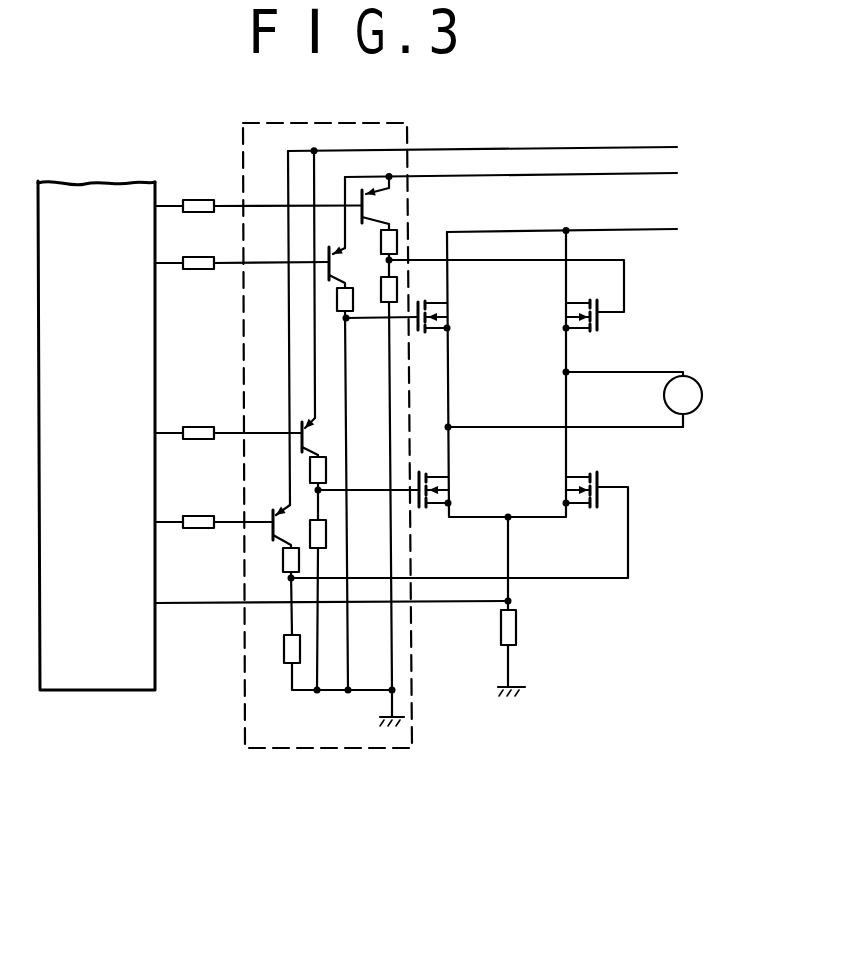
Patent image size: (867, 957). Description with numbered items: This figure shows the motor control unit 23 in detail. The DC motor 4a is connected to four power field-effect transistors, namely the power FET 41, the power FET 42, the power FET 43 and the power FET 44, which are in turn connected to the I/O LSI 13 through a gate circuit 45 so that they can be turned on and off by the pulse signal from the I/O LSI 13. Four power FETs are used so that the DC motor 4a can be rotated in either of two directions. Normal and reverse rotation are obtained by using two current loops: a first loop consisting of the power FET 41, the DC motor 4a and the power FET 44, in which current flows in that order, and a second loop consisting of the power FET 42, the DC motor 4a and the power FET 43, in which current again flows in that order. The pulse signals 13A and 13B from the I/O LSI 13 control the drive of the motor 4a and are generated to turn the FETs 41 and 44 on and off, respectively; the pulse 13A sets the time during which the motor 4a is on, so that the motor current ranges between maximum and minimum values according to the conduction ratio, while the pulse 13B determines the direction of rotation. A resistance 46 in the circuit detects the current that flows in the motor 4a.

The I/O LSI 13 is at (106, 677).
The pulse signal 13A is at (183, 200).
The pulse signal 13B is at (174, 433).
The gate circuit 45 is at (247, 738).
The motor control unit 23 is at (458, 684).
The power field-effect transistor 41 is at (603, 322).
The power field-effect transistor 42 is at (453, 313).
The power field-effect transistor 43 is at (605, 472).
The power field-effect transistor 44 is at (455, 488).
The DC motor 4a is at (697, 413).
The resistance 46 is at (517, 627).